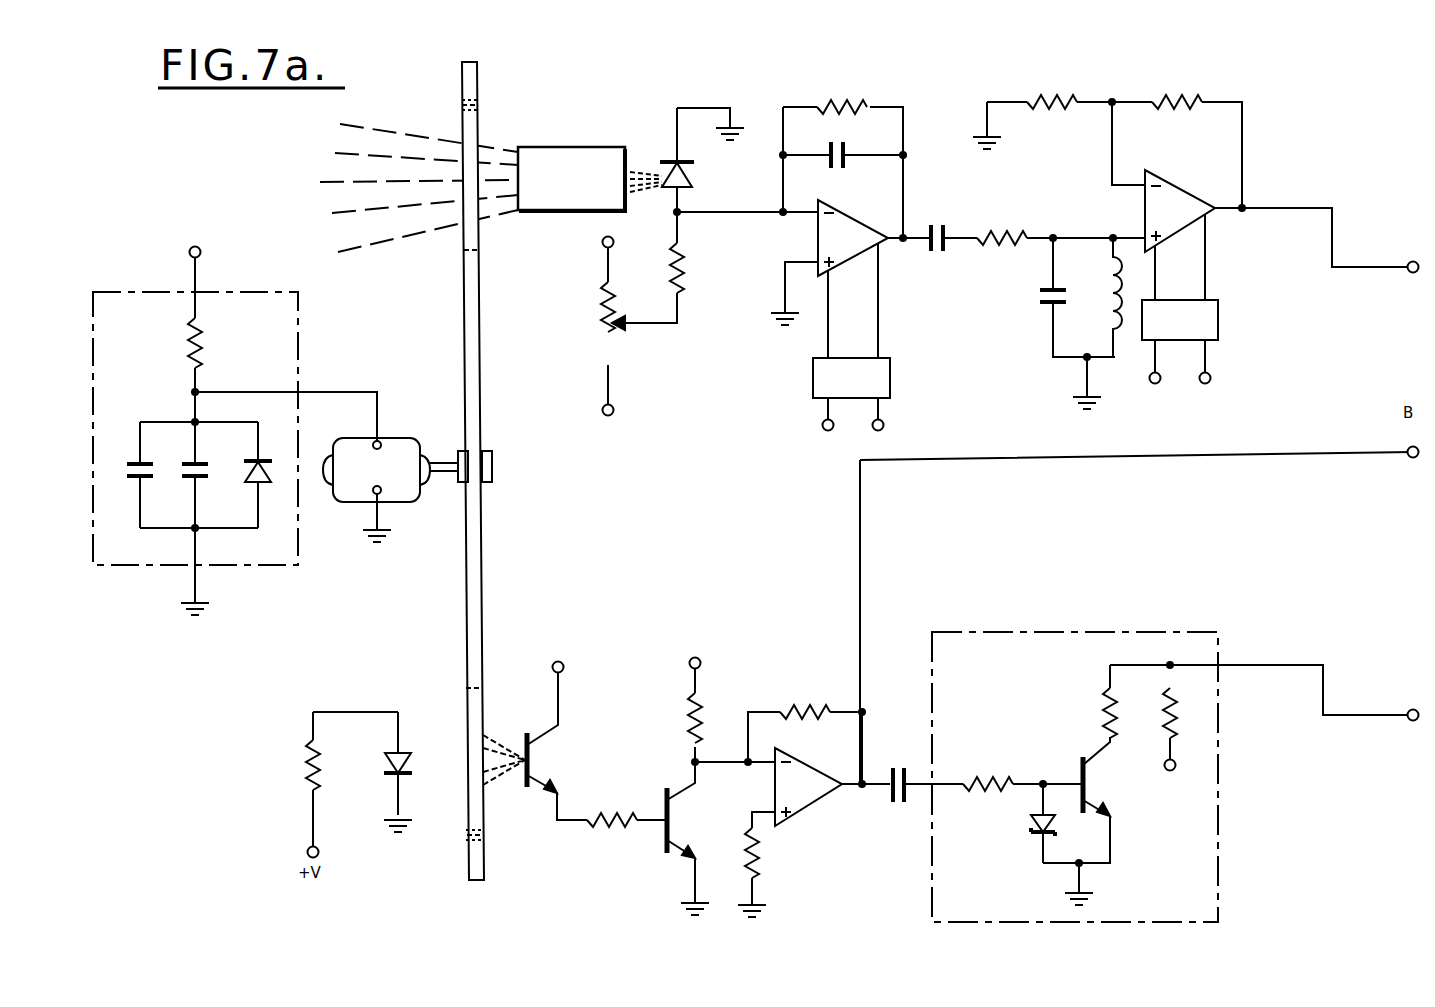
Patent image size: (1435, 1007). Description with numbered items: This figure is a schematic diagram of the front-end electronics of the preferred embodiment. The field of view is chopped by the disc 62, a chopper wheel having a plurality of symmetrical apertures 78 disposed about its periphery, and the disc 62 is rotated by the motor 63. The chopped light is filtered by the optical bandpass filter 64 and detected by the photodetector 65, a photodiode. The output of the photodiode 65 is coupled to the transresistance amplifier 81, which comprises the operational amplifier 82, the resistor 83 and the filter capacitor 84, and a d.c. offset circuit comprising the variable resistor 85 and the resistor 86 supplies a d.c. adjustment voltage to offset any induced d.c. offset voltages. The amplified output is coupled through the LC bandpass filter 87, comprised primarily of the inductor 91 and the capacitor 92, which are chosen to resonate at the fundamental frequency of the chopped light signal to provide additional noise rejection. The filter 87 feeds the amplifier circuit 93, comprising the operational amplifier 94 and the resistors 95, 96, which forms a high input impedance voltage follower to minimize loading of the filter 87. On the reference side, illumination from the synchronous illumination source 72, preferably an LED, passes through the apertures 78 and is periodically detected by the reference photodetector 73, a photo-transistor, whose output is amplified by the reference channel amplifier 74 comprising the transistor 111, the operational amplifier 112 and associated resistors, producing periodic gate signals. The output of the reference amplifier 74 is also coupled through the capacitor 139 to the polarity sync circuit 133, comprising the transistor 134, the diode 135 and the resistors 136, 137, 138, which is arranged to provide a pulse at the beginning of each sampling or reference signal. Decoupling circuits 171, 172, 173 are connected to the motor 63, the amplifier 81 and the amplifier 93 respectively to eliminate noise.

The disc 62 is at (463, 357).
The motor 63 is at (410, 438).
The optical bandpass filter 64 is at (567, 146).
The photodetector 65 is at (674, 166).
The synchronous illumination source 72 is at (466, 738).
The reference photodetector 73 is at (535, 771).
The reference channel amplifier 74 is at (820, 676).
The apertures 78 is at (478, 233).
The transresistance amplifier 81 is at (862, 75).
The operational amplifier 82 is at (817, 234).
The resistor 83 is at (836, 112).
The filter capacitor 84 is at (843, 163).
The variable resistor 85 is at (600, 323).
The resistor 86 is at (686, 262).
The LC bandpass filter 87 is at (1094, 219).
The inductor 91 is at (1105, 268).
The capacitor 92 is at (1036, 298).
The amplifier circuit 93 is at (1129, 58).
The operational amplifier 94 is at (1164, 186).
The resistor 95 is at (1050, 101).
The resistor 96 is at (1180, 101).
The transistor 111 is at (660, 840).
The operational amplifier 112 is at (812, 829).
The polarity sync circuit 133 is at (1070, 632).
The transistor 134 is at (1100, 806).
The diode 135 is at (1021, 826).
The resistor 136 is at (988, 780).
The resistor 137 is at (1102, 720).
The resistor 138 is at (1180, 700).
The capacitor 139 is at (900, 808).
The decoupling circuit 171 is at (298, 332).
The decoupling circuit 172 is at (813, 385).
The decoupling circuit 173 is at (1218, 326).